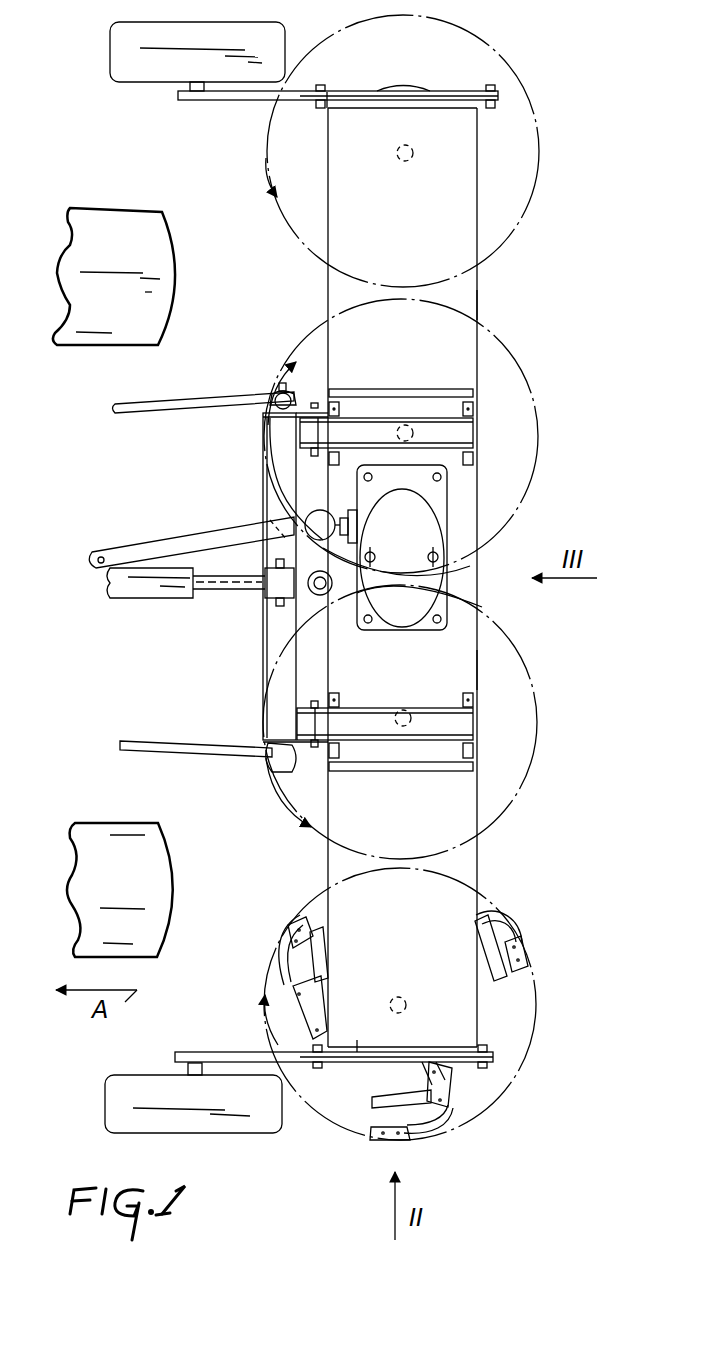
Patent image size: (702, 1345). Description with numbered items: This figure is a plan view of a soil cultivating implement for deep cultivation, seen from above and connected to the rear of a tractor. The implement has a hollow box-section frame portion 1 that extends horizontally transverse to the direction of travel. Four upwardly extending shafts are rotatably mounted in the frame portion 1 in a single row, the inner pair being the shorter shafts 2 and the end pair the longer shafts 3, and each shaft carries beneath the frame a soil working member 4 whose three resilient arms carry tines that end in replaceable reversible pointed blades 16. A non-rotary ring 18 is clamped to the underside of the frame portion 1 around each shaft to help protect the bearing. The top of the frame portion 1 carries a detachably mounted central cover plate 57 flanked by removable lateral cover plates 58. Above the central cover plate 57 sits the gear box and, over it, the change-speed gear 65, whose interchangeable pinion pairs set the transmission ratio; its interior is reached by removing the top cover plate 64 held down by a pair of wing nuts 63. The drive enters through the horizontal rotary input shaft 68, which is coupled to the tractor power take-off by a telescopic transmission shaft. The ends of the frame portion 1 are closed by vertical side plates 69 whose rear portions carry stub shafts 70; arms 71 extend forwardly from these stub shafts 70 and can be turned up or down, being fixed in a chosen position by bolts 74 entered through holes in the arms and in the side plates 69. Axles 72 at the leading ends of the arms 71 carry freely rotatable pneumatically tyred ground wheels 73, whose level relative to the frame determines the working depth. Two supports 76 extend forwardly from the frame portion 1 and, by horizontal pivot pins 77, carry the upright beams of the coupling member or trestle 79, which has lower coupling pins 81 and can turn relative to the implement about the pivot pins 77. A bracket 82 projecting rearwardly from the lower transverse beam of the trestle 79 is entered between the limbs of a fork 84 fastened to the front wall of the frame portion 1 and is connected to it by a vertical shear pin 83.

The hollow box-section frame portion 1 is at (480, 303).
The shafts 2 is at (407, 426).
The shafts 3 is at (396, 158).
The soil working member 4 is at (266, 170).
The reversible pointed blade 16 is at (290, 922).
The ring 18 is at (405, 88).
The central cover plate 57 is at (447, 669).
The lateral cover plates 58 is at (453, 191).
The wing nuts 63 is at (401, 559).
The top cover plate 64 is at (428, 528).
The change-speed gear 65 is at (449, 578).
The rotary input shaft 68 is at (357, 526).
The side plates 69 is at (327, 92).
The stub shafts 70 is at (488, 88).
The arms 71 is at (227, 100).
The axles 72 is at (188, 90).
The ground wheels 73 is at (118, 67).
The bolts 74 is at (323, 88).
The supports 76 is at (367, 400).
The pivot pins 77 is at (311, 403).
The coupling member or trestle 79 is at (258, 452).
The pins 81 is at (276, 768).
The bracket 82 is at (305, 598).
The shear pin 83 is at (337, 600).
The fork 84 is at (340, 593).